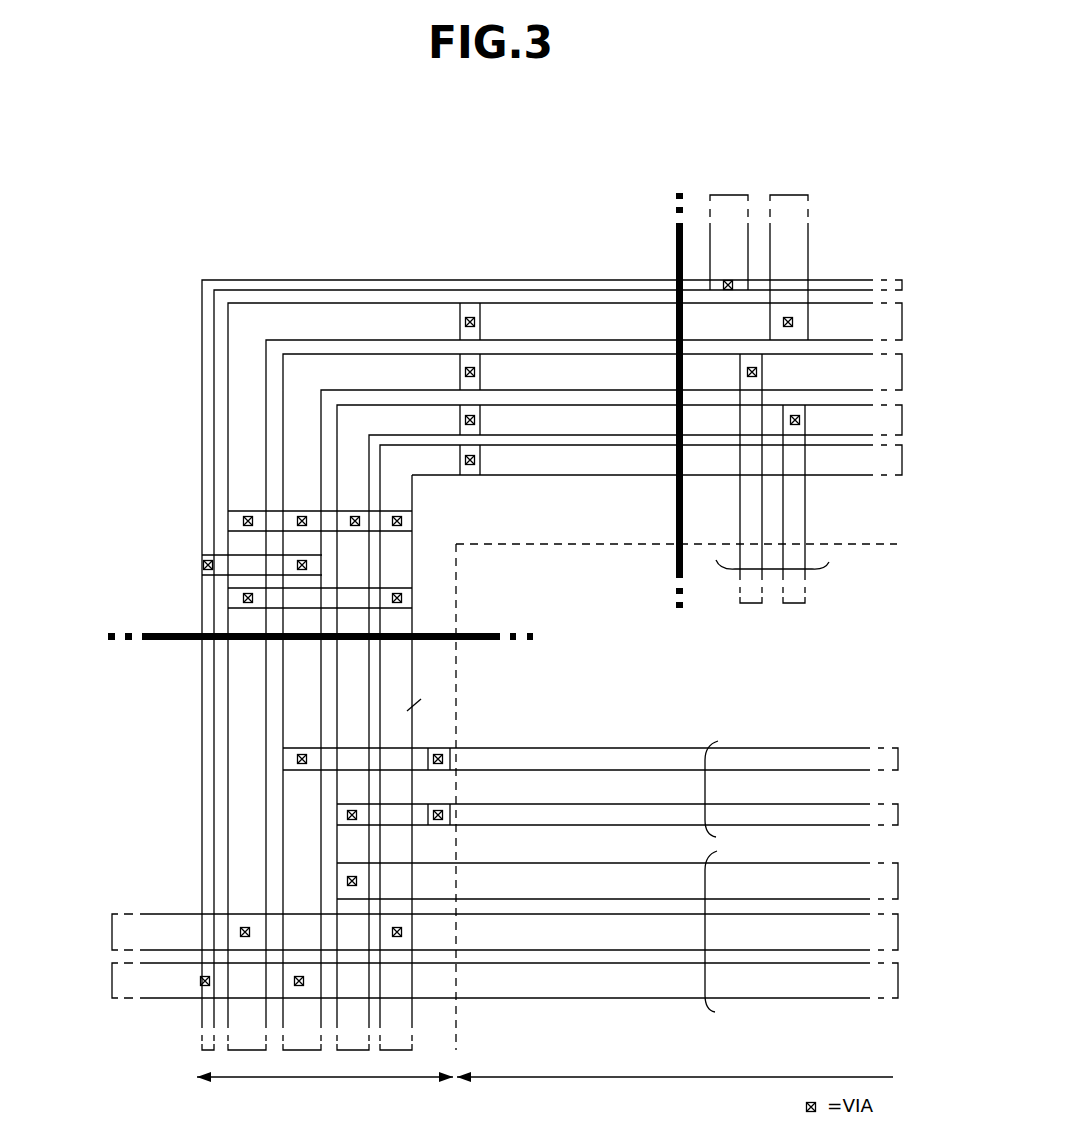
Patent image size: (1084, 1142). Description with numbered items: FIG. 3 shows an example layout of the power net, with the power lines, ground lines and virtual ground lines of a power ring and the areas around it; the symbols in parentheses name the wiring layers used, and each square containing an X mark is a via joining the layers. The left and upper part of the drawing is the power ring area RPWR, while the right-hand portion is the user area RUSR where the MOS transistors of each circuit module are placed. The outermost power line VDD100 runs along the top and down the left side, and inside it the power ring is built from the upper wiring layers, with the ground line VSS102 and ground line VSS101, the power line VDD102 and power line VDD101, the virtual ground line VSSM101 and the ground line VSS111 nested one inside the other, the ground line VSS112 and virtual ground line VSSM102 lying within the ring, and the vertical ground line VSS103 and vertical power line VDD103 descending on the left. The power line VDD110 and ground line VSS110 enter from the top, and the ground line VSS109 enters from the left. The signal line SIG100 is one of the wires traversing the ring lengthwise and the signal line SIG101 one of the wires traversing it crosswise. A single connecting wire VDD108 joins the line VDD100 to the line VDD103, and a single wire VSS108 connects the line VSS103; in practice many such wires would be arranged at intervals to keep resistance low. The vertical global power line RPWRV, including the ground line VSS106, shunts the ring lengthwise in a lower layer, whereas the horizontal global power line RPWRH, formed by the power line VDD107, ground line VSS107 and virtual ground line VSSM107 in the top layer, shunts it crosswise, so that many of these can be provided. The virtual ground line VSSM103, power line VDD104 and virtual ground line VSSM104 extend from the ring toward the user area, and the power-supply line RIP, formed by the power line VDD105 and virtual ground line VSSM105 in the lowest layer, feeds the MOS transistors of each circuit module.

The power line VDD100 is at (392, 285).
The signal line SIG100 is at (676, 260).
The power line VDD110 is at (733, 203).
The ground line VSS110 is at (787, 206).
The ground line VSS102 is at (344, 471).
The ground line VSS101 is at (681, 321).
The power line VDD102 is at (371, 497).
The power line VDD101 is at (681, 478).
The virtual ground line VSSM101 is at (619, 727).
The ground line VSS111 is at (641, 460).
The ground line VSS112 is at (414, 465).
The virtual ground line VSSM102 is at (360, 485).
The ground connecting wire VSS108 is at (350, 601).
The power connecting wire VDD108 is at (228, 567).
The signal line SIG101 is at (346, 627).
The virtual ground line VSSM103 is at (350, 697).
The power line VDD104 is at (418, 763).
The virtual ground line VSSM104 is at (418, 819).
The virtual ground line VSSM107 is at (617, 881).
The ground line VSS107 is at (563, 932).
The power line VDD107 is at (563, 980).
The ground line VSS103 is at (247, 845).
The power line VDD103 is at (302, 845).
The ground line VSS109 is at (167, 927).
The ground line VSS106 is at (792, 597).
The power line VDD105 is at (772, 760).
The virtual ground line VSSM105 is at (772, 815).
The power-supply line RIP is at (715, 777).
The vertical global power line RPWRV is at (810, 570).
The horizontal global power line RPWRH is at (717, 946).
The power ring area RPWR is at (325, 1087).
The user area RUSR is at (675, 1086).